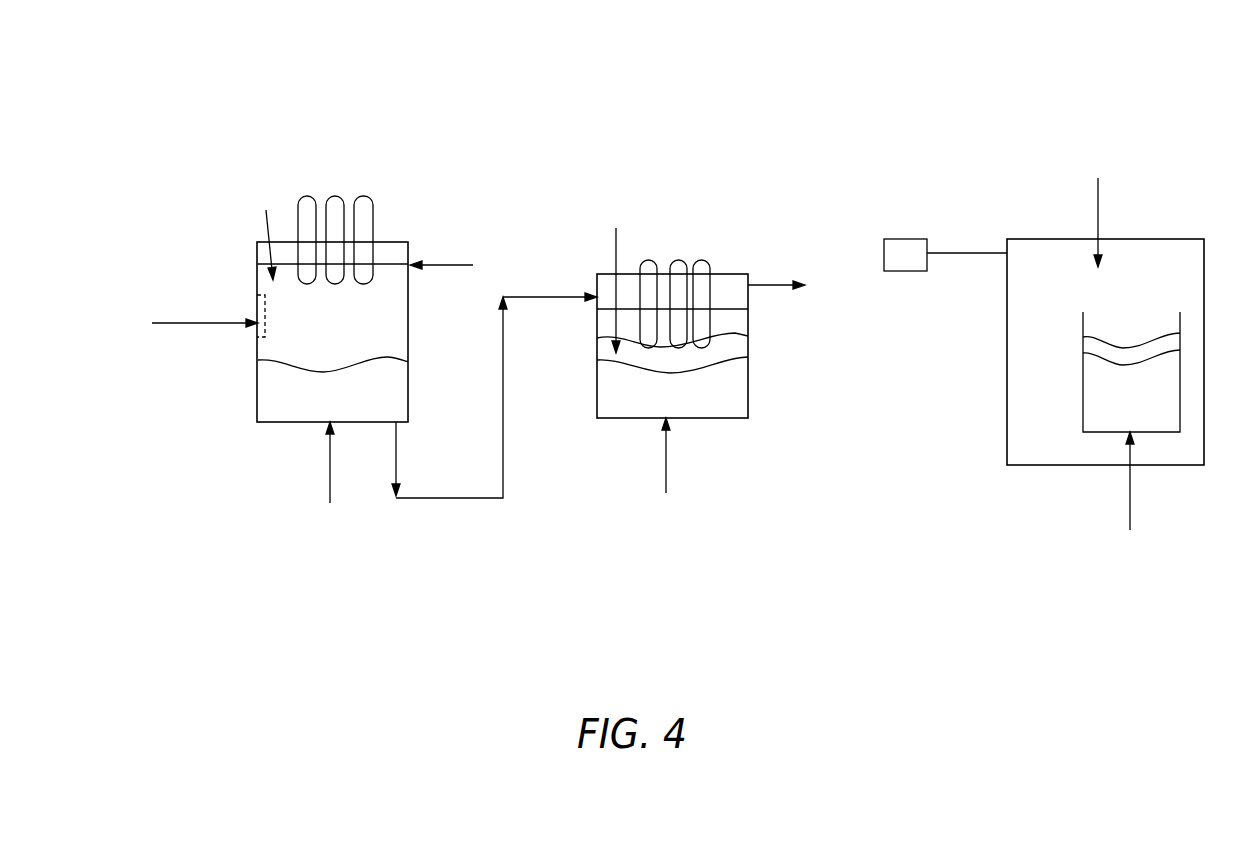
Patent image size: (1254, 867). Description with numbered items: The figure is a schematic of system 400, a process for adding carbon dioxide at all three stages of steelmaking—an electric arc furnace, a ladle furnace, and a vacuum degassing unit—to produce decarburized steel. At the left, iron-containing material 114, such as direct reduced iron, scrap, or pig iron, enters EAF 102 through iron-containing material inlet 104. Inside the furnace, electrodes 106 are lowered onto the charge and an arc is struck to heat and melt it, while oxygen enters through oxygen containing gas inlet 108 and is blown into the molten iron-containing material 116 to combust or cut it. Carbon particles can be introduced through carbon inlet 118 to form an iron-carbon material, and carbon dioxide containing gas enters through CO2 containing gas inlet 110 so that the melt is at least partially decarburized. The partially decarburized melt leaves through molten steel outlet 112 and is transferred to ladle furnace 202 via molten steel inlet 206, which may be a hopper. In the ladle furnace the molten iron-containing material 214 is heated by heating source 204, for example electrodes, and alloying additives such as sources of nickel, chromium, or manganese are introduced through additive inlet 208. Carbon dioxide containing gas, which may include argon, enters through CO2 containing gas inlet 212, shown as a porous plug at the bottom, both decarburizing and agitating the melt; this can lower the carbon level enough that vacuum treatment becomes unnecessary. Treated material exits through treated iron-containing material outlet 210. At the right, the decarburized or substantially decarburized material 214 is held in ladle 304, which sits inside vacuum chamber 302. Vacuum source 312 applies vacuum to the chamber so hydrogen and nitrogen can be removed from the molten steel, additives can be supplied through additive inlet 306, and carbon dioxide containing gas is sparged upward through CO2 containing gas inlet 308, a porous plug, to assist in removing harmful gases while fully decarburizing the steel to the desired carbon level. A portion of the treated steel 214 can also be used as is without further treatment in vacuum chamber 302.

The system 400 is at (248, 110).
The electric arc furnace 102 is at (350, 345).
The iron-containing material inlet 104 is at (258, 316).
The electrodes 106 is at (369, 218).
The oxygen containing gas inlet 108 is at (436, 265).
The CO2 containing gas inlet 110 is at (327, 427).
The molten steel outlet 112 is at (399, 424).
The iron-containing material 114 is at (245, 327).
The molten iron-containing material 116 is at (267, 380).
The carbon inlet 118 is at (267, 228).
The ladle furnace 202 is at (750, 391).
The heating source 204 is at (704, 278).
The molten steel inlet 206 is at (596, 296).
The additive inlet 208 is at (618, 236).
The treated iron-containing material outlet 210 is at (779, 283).
The CO2 containing gas inlet 212 is at (663, 420).
The molten iron-containing material 214 is at (613, 380).
The vacuum chamber 302 is at (1007, 350).
The ladle 304 is at (1082, 332).
The additive inlet 306 is at (1102, 227).
The CO2 containing gas inlet 308 is at (1128, 437).
The vacuum source 312 is at (921, 240).